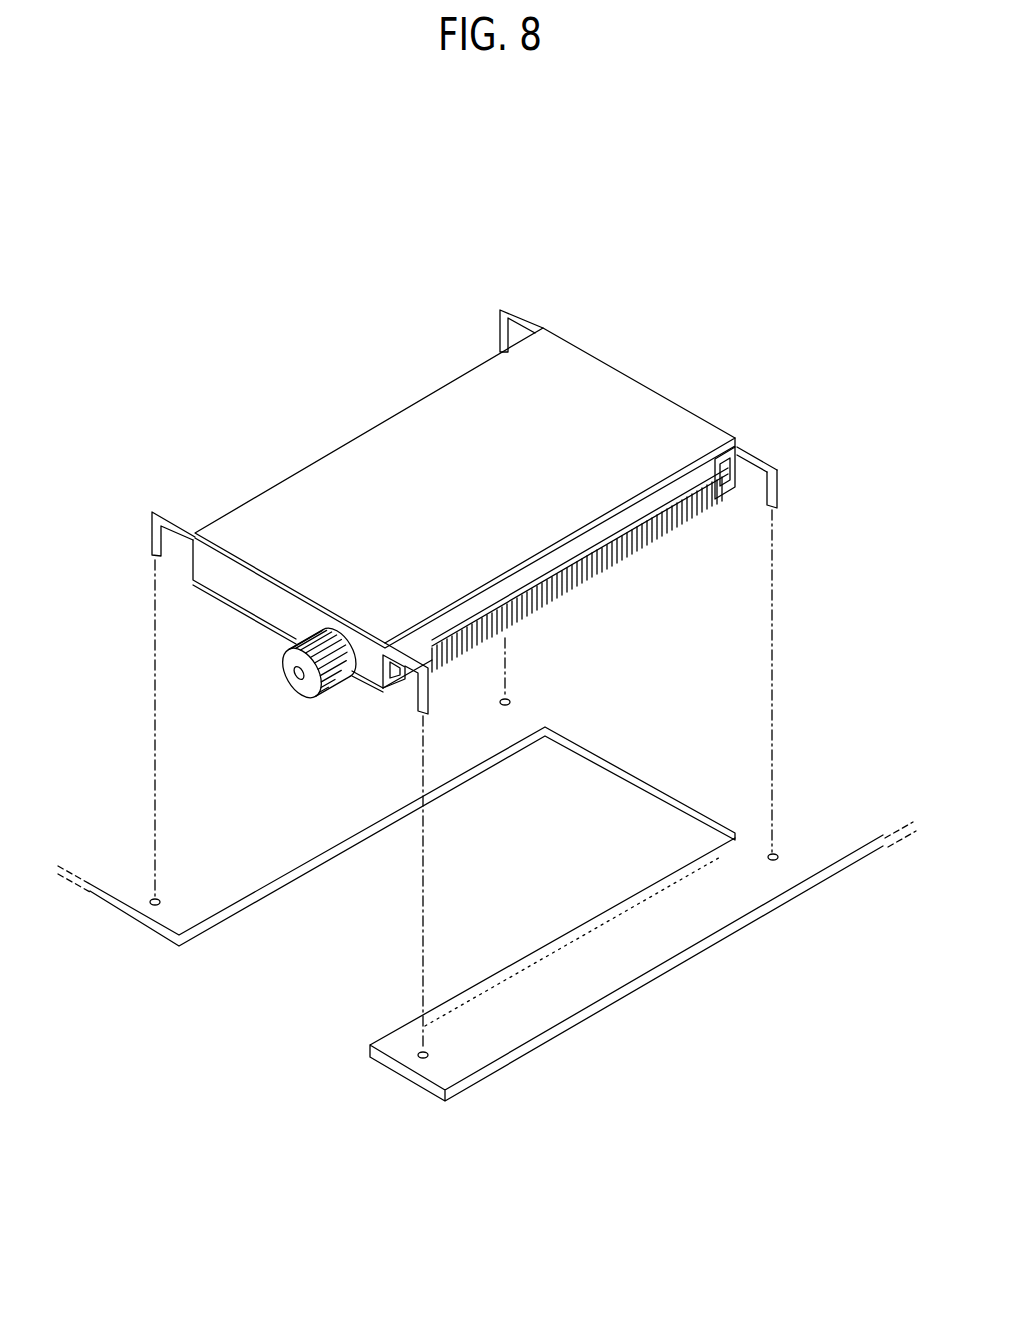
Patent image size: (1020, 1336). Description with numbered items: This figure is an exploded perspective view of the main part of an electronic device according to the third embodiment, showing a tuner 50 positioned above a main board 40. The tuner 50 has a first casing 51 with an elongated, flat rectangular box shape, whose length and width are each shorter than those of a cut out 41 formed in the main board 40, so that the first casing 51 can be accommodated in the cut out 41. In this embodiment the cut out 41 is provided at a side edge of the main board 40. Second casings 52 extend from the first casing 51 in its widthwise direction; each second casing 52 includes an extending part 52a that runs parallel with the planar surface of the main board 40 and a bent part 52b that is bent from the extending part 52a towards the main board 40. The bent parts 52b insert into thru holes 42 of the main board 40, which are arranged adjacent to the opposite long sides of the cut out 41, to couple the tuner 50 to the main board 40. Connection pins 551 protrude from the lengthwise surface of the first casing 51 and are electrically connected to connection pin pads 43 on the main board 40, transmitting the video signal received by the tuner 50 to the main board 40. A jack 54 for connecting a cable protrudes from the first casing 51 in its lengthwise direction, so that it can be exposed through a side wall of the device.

The tuner 50 is at (530, 491).
The first casing 51 is at (372, 434).
The second casing 52 is at (822, 456).
The extending part 52a is at (752, 456).
The bent part 52b is at (780, 488).
The connection pins 551 is at (622, 562).
The jack 54 is at (297, 694).
The main board 40 is at (643, 977).
The cut out 41 is at (322, 963).
The thru holes 42 is at (778, 860).
The connection pin pads 43 is at (604, 932).